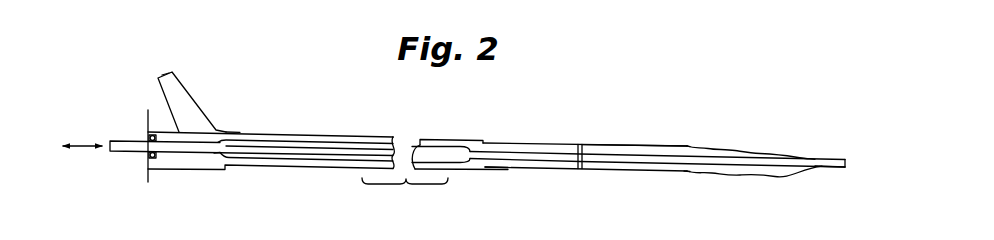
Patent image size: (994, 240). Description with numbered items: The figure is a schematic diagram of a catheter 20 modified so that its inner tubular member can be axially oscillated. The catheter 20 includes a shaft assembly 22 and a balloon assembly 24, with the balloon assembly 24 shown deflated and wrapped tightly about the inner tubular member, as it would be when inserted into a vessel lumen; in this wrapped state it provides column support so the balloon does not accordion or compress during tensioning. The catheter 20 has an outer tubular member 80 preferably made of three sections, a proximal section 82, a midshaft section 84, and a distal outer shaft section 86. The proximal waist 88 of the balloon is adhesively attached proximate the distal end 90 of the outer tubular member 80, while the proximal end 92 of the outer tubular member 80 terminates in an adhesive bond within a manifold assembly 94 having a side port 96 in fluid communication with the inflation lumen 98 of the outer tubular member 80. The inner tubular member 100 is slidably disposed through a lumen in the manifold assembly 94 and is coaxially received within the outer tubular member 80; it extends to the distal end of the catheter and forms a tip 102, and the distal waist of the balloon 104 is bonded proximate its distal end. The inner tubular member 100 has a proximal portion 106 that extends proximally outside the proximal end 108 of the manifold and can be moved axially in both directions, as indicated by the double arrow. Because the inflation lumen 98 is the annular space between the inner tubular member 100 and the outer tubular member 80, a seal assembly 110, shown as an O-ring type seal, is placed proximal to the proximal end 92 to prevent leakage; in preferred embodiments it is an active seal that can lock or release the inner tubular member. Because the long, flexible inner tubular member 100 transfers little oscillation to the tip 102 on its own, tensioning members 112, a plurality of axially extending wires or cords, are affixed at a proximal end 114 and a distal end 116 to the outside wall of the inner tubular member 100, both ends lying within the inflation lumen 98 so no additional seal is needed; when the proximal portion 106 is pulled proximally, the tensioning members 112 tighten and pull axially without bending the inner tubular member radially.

The catheter 20 is at (304, 118).
The shaft assembly 22 is at (330, 172).
The balloon assembly 24 is at (740, 151).
The outer tubular member 80 is at (501, 143).
The proximal section 82 is at (437, 140).
The midshaft section 84 is at (569, 145).
The distal outer shaft section 86 is at (625, 145).
The proximal waist 88 is at (687, 146).
The distal end 90 is at (688, 172).
The proximal end 92 is at (231, 132).
The manifold assembly 94 is at (194, 116).
The side port 96 is at (162, 75).
The inflation lumen 98 is at (509, 170).
The inner tubular member 100 is at (561, 162).
The tip 102 is at (846, 159).
The distal waist of the balloon 104 is at (823, 168).
The proximal portion 106 is at (123, 150).
The proximal end of the manifold 108 is at (148, 133).
The seal assembly 110 is at (148, 157).
The tensioning members 112 is at (257, 144).
The proximal end 114 is at (214, 153).
The distal end 116 is at (462, 169).